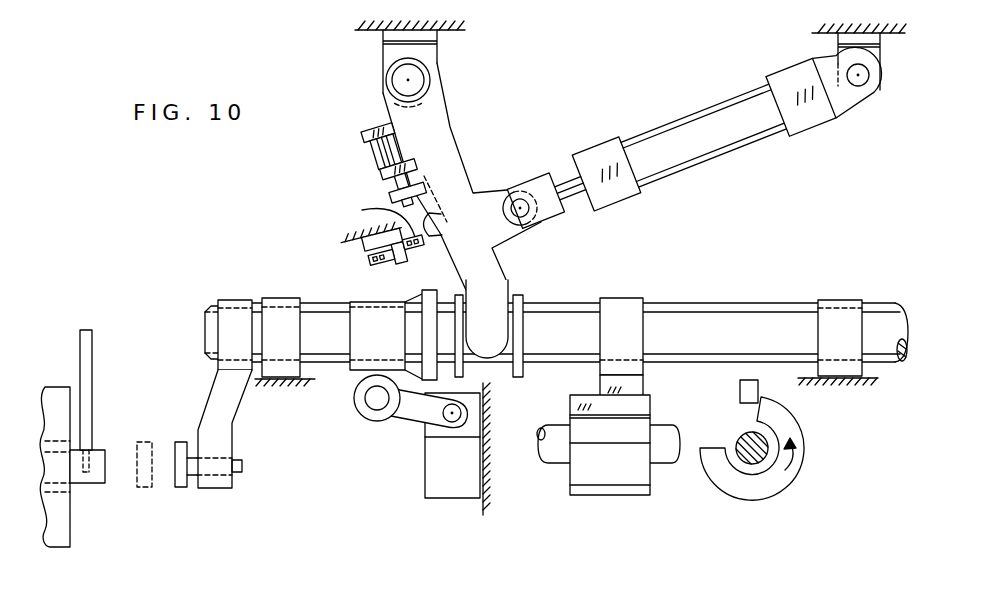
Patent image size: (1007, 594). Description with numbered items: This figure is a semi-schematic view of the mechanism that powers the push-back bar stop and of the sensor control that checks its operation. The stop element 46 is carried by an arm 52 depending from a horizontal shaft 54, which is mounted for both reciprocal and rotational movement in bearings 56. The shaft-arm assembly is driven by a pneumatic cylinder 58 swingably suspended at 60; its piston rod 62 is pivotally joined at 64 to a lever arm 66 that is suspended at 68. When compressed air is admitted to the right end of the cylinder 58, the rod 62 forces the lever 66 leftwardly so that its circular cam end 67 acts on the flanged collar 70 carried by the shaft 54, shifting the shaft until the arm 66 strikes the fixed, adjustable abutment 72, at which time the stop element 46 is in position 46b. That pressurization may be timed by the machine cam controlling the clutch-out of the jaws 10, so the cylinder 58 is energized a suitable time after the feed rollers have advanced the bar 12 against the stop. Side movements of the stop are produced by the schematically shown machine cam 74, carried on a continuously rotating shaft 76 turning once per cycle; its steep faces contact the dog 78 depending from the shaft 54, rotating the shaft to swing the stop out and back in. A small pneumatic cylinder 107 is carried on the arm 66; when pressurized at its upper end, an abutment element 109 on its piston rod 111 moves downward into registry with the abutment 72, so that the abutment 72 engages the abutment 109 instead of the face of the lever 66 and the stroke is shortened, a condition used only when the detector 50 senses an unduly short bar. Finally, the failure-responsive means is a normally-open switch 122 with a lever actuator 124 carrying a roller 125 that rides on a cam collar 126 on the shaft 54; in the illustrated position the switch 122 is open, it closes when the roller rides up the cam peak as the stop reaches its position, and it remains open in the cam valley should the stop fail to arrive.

The jaws 10 is at (47, 490).
The bar 12 is at (110, 487).
The stop element 46 is at (182, 488).
The stop element position 46b is at (145, 488).
The detector 50 is at (92, 357).
The arm 52 is at (237, 423).
The horizontal shaft 54 is at (207, 300).
The bearings 56 is at (262, 297).
The pneumatic cylinder 58 is at (713, 163).
The suspension point 60 is at (872, 88).
The piston rod 62 is at (580, 193).
The pivot joint 64 is at (513, 207).
The lever arm 66 is at (450, 127).
The circular cam end 67 is at (497, 363).
The suspension point 68 is at (430, 67).
The flanged collar 70 is at (520, 297).
The fixed abutment 72 is at (377, 237).
The machine cam 74 is at (607, 495).
The shaft 76 is at (550, 465).
The dog 78 is at (637, 388).
The pneumatic cylinder 107 is at (376, 150).
The abutment element 109 is at (443, 229).
The piston rod 111 is at (385, 173).
The switch 122 is at (425, 498).
The lever actuator 124 is at (407, 422).
The roller 125 is at (358, 416).
The cam collar 126 is at (362, 333).